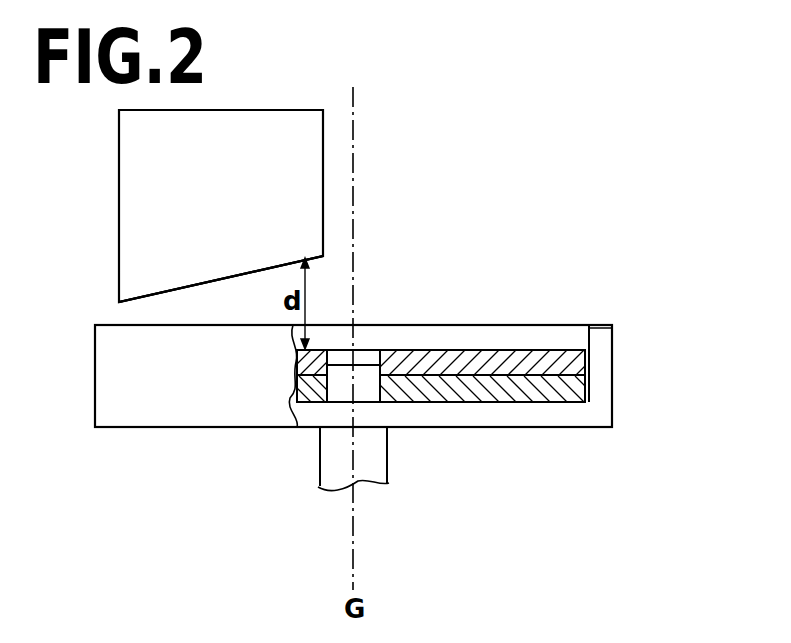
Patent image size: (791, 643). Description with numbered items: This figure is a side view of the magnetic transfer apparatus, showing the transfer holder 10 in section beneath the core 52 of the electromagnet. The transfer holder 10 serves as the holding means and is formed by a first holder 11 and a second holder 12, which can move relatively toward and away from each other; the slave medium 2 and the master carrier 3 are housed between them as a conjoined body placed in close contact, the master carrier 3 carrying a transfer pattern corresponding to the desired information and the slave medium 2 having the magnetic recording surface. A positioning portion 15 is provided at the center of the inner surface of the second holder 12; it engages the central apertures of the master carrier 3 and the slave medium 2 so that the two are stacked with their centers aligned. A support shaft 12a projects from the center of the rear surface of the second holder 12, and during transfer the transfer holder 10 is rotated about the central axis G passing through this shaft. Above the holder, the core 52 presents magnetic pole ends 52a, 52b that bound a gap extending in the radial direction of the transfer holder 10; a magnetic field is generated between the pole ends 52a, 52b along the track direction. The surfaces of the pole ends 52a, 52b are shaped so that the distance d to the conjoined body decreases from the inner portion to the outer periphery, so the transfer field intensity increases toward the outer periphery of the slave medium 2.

The slave medium 2 is at (484, 365).
The master carrier 3 is at (487, 378).
The transfer holder 10 is at (396, 383).
The first holder 11 is at (560, 323).
The second holder 12 is at (601, 376).
The support shaft 12a is at (375, 457).
The positioning portion 15 is at (362, 374).
The core 52 is at (132, 218).
The magnetic pole end 52a is at (308, 259).
The magnetic pole end 52b is at (221, 279).